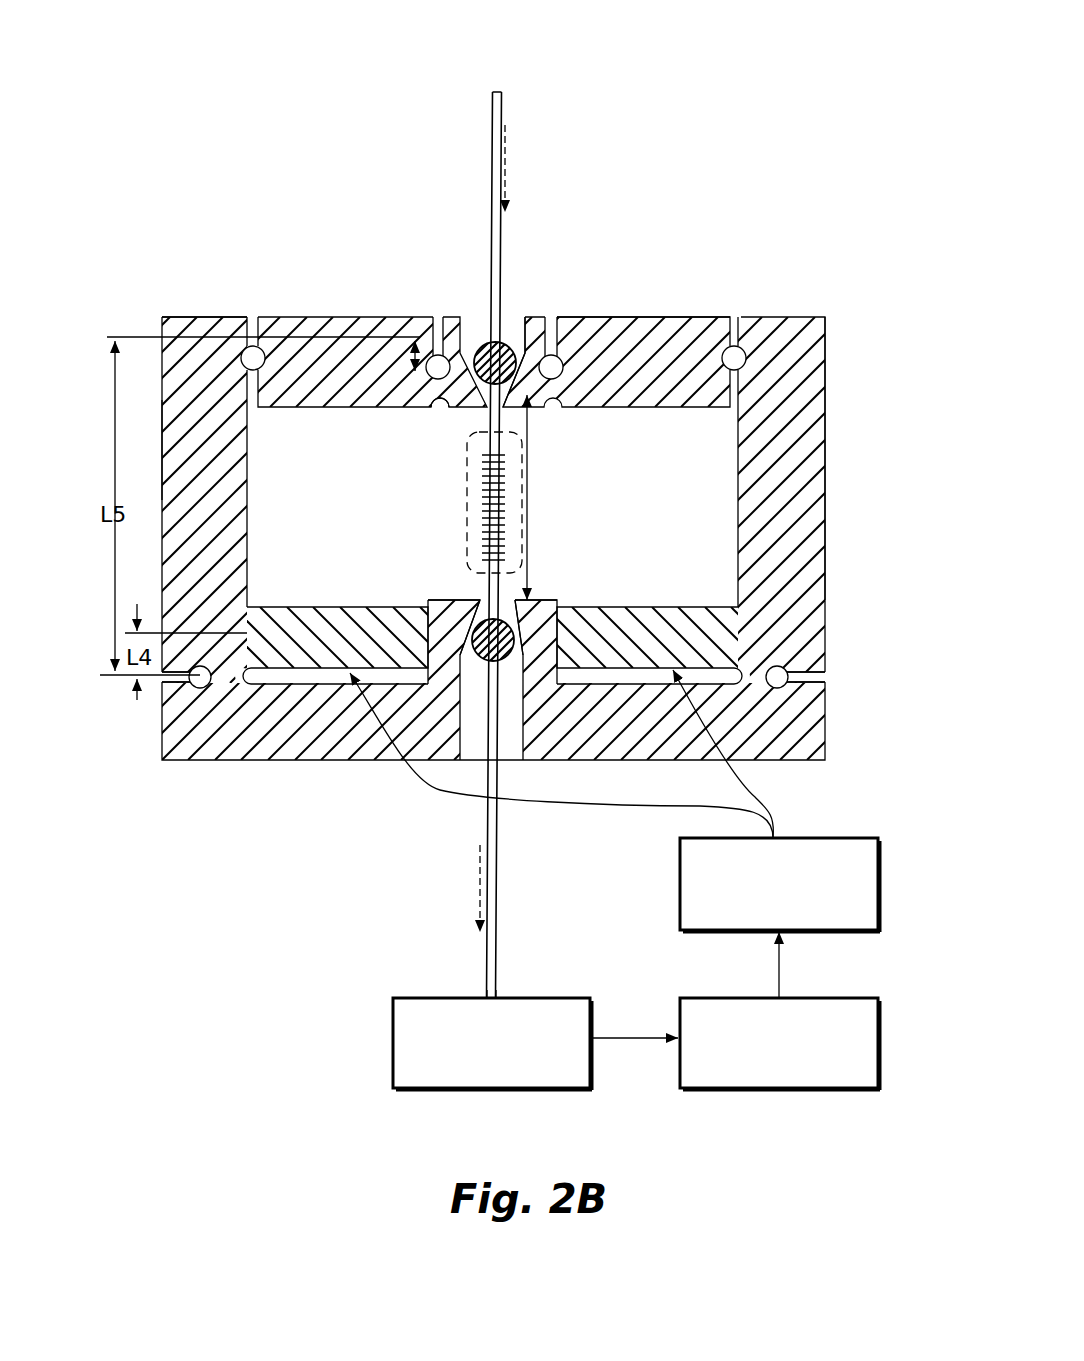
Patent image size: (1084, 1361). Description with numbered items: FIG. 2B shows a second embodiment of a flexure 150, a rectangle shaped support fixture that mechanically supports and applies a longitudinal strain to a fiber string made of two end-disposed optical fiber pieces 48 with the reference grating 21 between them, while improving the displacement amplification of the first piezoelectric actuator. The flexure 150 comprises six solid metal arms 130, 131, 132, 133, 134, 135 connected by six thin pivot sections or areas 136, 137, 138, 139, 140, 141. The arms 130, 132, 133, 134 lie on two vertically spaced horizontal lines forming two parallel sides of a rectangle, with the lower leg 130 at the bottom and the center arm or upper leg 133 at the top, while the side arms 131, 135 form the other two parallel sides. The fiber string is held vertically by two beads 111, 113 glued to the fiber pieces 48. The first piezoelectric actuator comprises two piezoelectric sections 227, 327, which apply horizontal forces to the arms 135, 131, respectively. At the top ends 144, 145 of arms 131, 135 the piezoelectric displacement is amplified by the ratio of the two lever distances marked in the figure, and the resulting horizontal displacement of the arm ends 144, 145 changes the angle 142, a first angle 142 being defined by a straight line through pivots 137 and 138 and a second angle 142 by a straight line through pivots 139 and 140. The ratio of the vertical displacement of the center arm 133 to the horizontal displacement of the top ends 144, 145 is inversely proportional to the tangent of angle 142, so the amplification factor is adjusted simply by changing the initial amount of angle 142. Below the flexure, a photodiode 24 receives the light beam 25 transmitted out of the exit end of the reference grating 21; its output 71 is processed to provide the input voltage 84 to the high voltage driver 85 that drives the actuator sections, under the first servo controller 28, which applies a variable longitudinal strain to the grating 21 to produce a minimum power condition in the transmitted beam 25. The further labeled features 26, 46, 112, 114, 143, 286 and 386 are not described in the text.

The reference grating 21 is at (522, 505).
The photodiode 24 is at (393, 1047).
The light beam 25 is at (487, 890).
The fiber end at photodiode 26 is at (495, 998).
The first servo controller 28 is at (850, 1090).
The optical fiber from coupler 46 is at (494, 158).
The optical fiber pieces 48 is at (250, 338).
The output 71 is at (640, 1038).
The input voltage 84 is at (779, 978).
The high voltage driver 85 is at (878, 856).
The bead 111 is at (512, 318).
The lower funnel opening 112 is at (472, 600).
The bead 113 is at (503, 662).
The upper funnel opening 114 is at (537, 318).
The arm 130 is at (317, 760).
The arm 131 is at (183, 472).
The arm 132 is at (293, 322).
The arm 133 is at (457, 320).
The arm 134 is at (653, 318).
The arm 135 is at (797, 493).
The pivot section 136 is at (205, 760).
The pivot section 137 is at (253, 340).
The pivot section 138 is at (437, 390).
The pivot section 139 is at (577, 318).
The pivot section 140 is at (745, 335).
The pivot section 141 is at (757, 682).
The angle 142 is at (410, 356).
The lower clamp block 143 is at (462, 598).
The top end 144 is at (210, 318).
The top end 145 is at (790, 345).
The flexure 150 is at (290, 893).
The piezoelectric section 227 is at (612, 607).
The left actuator drive lead 286 is at (662, 805).
The piezoelectric section 327 is at (297, 607).
The right actuator drive lead 386 is at (755, 797).